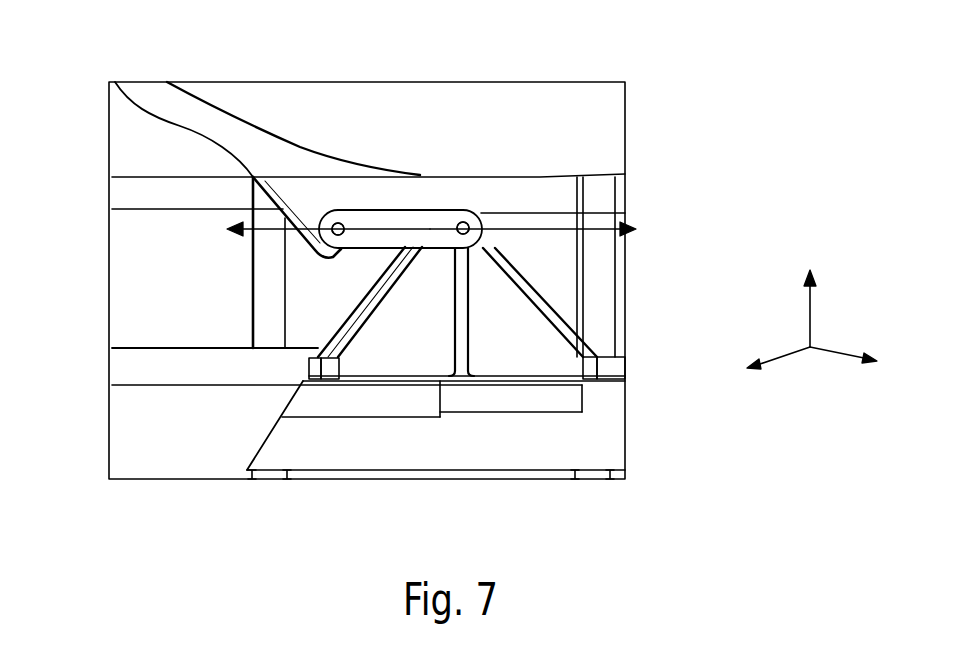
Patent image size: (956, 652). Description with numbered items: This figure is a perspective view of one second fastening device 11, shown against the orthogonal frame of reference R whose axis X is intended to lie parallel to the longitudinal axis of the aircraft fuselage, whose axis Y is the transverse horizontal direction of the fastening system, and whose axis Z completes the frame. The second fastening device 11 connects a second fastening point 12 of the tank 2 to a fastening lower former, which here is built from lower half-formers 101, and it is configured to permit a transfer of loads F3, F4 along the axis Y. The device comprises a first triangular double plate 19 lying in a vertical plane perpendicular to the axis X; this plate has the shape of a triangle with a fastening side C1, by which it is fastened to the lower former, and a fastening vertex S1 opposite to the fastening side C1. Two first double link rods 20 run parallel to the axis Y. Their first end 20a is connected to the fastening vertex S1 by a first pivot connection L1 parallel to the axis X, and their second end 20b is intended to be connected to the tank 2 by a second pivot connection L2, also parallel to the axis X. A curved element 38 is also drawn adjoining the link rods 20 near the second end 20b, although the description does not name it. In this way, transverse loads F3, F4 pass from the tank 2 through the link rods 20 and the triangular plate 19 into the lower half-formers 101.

The tank 2 is at (573, 127).
The curved guide plate 38 is at (115, 82).
The second fastening point 12 is at (338, 172).
The first double link rods 20 is at (445, 210).
The first end 20a is at (482, 206).
The second end 20b is at (322, 218).
The first pivot connection L1 is at (463, 220).
The second pivot connection L2 is at (337, 222).
The load F3 is at (275, 231).
The load F4 is at (565, 229).
The fastening vertex S1 is at (483, 243).
The second fastening device 11 is at (630, 260).
The first triangular double plate 19 is at (350, 318).
The fastening side C1 is at (383, 380).
The lower half-formers 101 is at (593, 448).
The orthogonal frame of reference R is at (813, 368).
The axis X is at (871, 383).
The axis Y is at (760, 388).
The axis Z is at (836, 287).